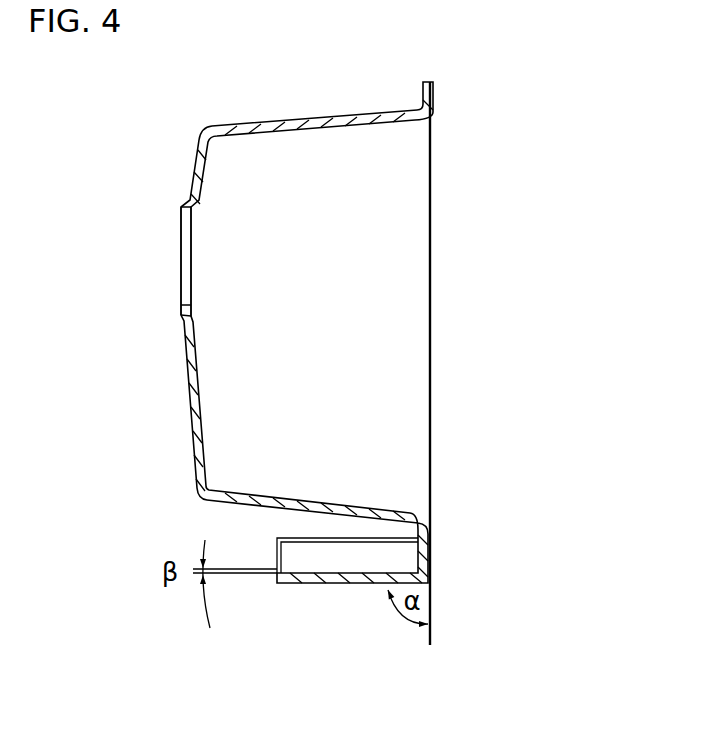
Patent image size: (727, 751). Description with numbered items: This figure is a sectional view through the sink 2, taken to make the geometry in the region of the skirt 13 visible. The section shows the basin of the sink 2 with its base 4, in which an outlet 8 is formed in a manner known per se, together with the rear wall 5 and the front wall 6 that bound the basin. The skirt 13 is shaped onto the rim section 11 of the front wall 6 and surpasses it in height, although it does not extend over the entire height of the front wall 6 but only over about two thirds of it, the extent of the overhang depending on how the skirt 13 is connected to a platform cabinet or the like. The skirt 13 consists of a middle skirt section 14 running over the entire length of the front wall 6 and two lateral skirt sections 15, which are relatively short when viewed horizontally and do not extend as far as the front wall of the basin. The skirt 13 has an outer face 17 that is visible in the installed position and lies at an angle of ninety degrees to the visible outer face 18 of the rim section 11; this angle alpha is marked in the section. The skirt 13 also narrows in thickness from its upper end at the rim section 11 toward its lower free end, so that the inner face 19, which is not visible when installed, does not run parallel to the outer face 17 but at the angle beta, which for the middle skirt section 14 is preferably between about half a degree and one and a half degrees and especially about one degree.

The sink 2 is at (452, 95).
The base 4 is at (197, 182).
The rear wall 5 is at (326, 118).
The front wall 6 is at (245, 497).
The outlet 8 is at (193, 255).
The rim section 11 is at (433, 548).
The skirt 13 is at (305, 592).
The middle skirt section 14 is at (318, 572).
The lateral skirt section 15 is at (360, 553).
The outer face 17 is at (340, 585).
The outer face 18 is at (433, 575).
The inner face 19 is at (295, 572).